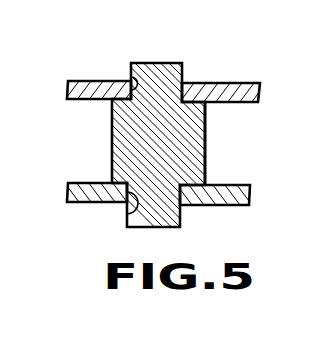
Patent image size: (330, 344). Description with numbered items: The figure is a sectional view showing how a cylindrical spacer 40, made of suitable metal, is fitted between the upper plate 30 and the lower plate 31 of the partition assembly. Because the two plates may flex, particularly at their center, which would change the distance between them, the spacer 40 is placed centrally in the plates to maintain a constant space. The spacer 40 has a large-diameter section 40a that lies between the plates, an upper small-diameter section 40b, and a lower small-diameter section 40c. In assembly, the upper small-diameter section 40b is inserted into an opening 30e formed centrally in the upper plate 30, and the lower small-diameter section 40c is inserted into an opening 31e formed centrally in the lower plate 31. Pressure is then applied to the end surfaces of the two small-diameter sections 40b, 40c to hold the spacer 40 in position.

The upper plate 30 is at (250, 82).
The opening 30e is at (131, 79).
The lower plate 31 is at (230, 206).
The opening 31e is at (128, 213).
The cylindrical spacer 40 is at (160, 63).
The large-diameter section 40a is at (205, 143).
The upper small-diameter section 40b is at (185, 80).
The lower small-diameter section 40c is at (189, 206).